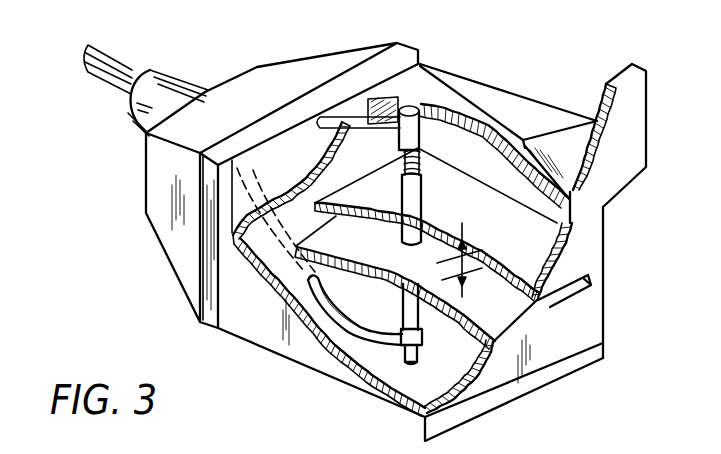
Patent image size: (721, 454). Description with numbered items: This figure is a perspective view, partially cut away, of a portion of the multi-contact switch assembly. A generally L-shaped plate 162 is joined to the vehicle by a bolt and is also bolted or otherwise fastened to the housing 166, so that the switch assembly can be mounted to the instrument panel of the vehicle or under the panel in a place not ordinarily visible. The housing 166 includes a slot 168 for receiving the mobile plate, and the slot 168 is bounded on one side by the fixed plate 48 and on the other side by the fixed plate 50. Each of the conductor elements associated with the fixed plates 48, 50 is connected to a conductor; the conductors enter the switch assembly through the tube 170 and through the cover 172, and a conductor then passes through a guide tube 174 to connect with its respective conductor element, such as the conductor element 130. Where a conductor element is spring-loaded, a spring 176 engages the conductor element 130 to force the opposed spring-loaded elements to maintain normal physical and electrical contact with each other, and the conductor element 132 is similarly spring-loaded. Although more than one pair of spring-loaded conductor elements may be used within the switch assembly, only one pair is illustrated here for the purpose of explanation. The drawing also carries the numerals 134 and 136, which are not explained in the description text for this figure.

The fixed plate 48 is at (503, 243).
The fixed plate 50 is at (517, 313).
The conductor element 130 is at (410, 198).
The conductor element 132 is at (407, 243).
The shaft / curved arm 134 is at (105, 77).
The arm 136 is at (112, 60).
The L-shaped plate 162 is at (618, 132).
The housing 166 is at (518, 112).
The slot 168 is at (592, 280).
The tube 170 is at (128, 125).
The cover 172 is at (175, 236).
The guide tube 174 is at (443, 97).
The spring 176 is at (422, 160).